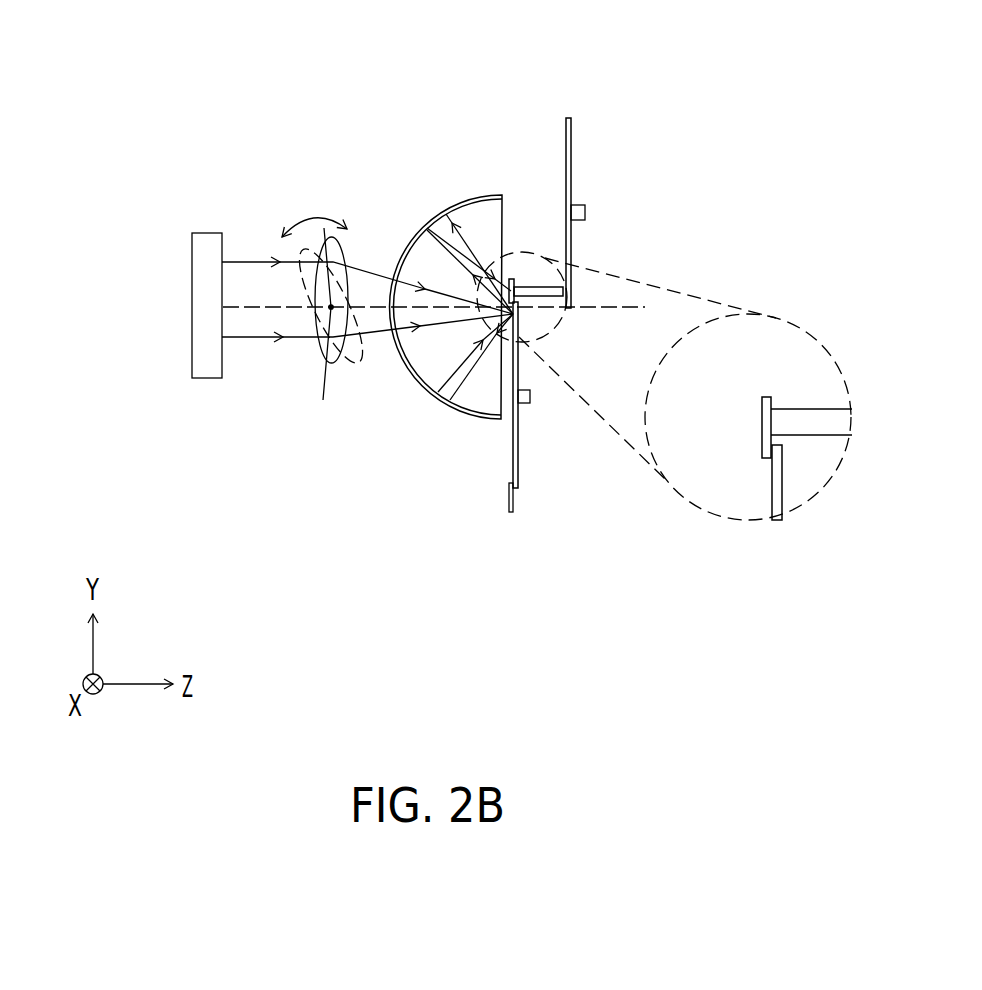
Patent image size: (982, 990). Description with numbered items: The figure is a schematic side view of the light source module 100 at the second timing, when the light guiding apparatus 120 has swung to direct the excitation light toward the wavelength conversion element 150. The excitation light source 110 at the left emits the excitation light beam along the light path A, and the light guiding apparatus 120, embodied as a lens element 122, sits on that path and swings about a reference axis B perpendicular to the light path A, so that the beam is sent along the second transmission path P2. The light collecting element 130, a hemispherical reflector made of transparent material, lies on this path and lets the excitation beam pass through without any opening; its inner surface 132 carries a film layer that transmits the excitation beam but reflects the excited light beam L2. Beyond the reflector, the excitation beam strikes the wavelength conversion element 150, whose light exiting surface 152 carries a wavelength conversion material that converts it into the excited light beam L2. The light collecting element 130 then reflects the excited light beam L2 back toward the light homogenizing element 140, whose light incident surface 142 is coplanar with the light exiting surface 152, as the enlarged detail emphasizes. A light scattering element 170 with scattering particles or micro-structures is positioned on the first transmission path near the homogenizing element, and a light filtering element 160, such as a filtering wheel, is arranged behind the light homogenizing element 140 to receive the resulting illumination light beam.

The light source module 100 is at (674, 635).
The excitation light source 110 is at (192, 313).
The light guiding apparatus 120 is at (323, 400).
The lens element 122 is at (335, 382).
The light collecting element 130 is at (444, 216).
The inner surface 132 is at (450, 212).
The light homogenizing element 140 is at (680, 247).
The light incident surface 142 is at (770, 418).
The wavelength conversion element 150 is at (654, 464).
The light exiting surface 152 is at (771, 492).
The light filtering element 160 is at (571, 118).
The light scattering element 170 is at (509, 512).
The light path A is at (572, 297).
The reference axis B is at (324, 228).
The excited light beam L2 is at (468, 378).
The second transmission path P2 is at (480, 272).